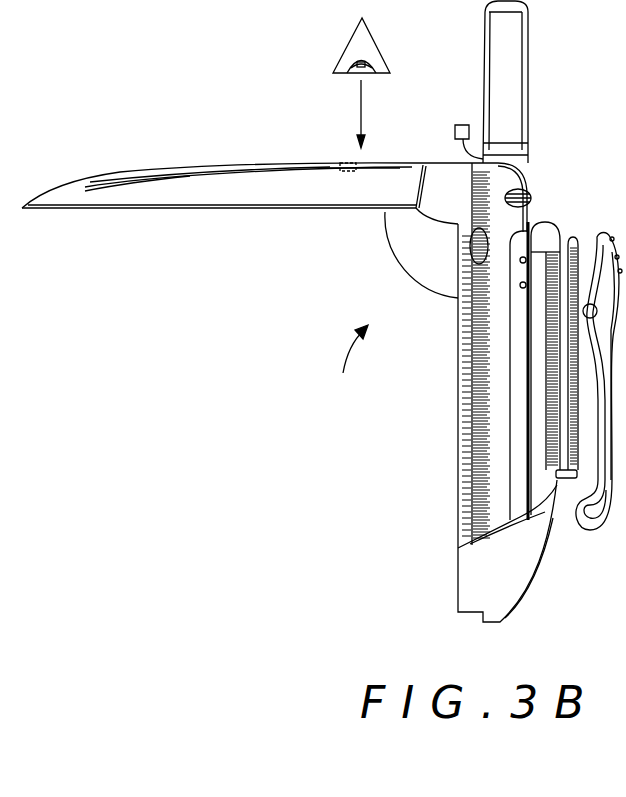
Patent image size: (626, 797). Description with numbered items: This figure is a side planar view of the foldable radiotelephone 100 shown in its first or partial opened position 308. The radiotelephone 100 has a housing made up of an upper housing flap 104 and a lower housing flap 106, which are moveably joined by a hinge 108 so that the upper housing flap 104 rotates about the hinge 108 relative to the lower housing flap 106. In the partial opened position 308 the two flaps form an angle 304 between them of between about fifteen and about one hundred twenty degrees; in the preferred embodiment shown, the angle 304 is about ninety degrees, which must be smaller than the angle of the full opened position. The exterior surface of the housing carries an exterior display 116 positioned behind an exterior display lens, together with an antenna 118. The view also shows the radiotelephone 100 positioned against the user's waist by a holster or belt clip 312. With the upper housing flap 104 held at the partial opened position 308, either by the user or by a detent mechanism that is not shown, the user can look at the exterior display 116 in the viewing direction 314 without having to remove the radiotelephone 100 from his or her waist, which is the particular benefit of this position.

The foldable radiotelephone 100 is at (613, 163).
The upper housing flap 104 is at (202, 163).
The lower housing flap 106 is at (468, 499).
The hinge 108 is at (447, 188).
The exterior display 116 is at (348, 162).
The antenna 118 is at (518, 80).
The angle of partial opened position 304 is at (400, 270).
The partial opened position 308 is at (345, 364).
The holster or belt clip 312 is at (511, 594).
The viewing direction 314 is at (360, 97).